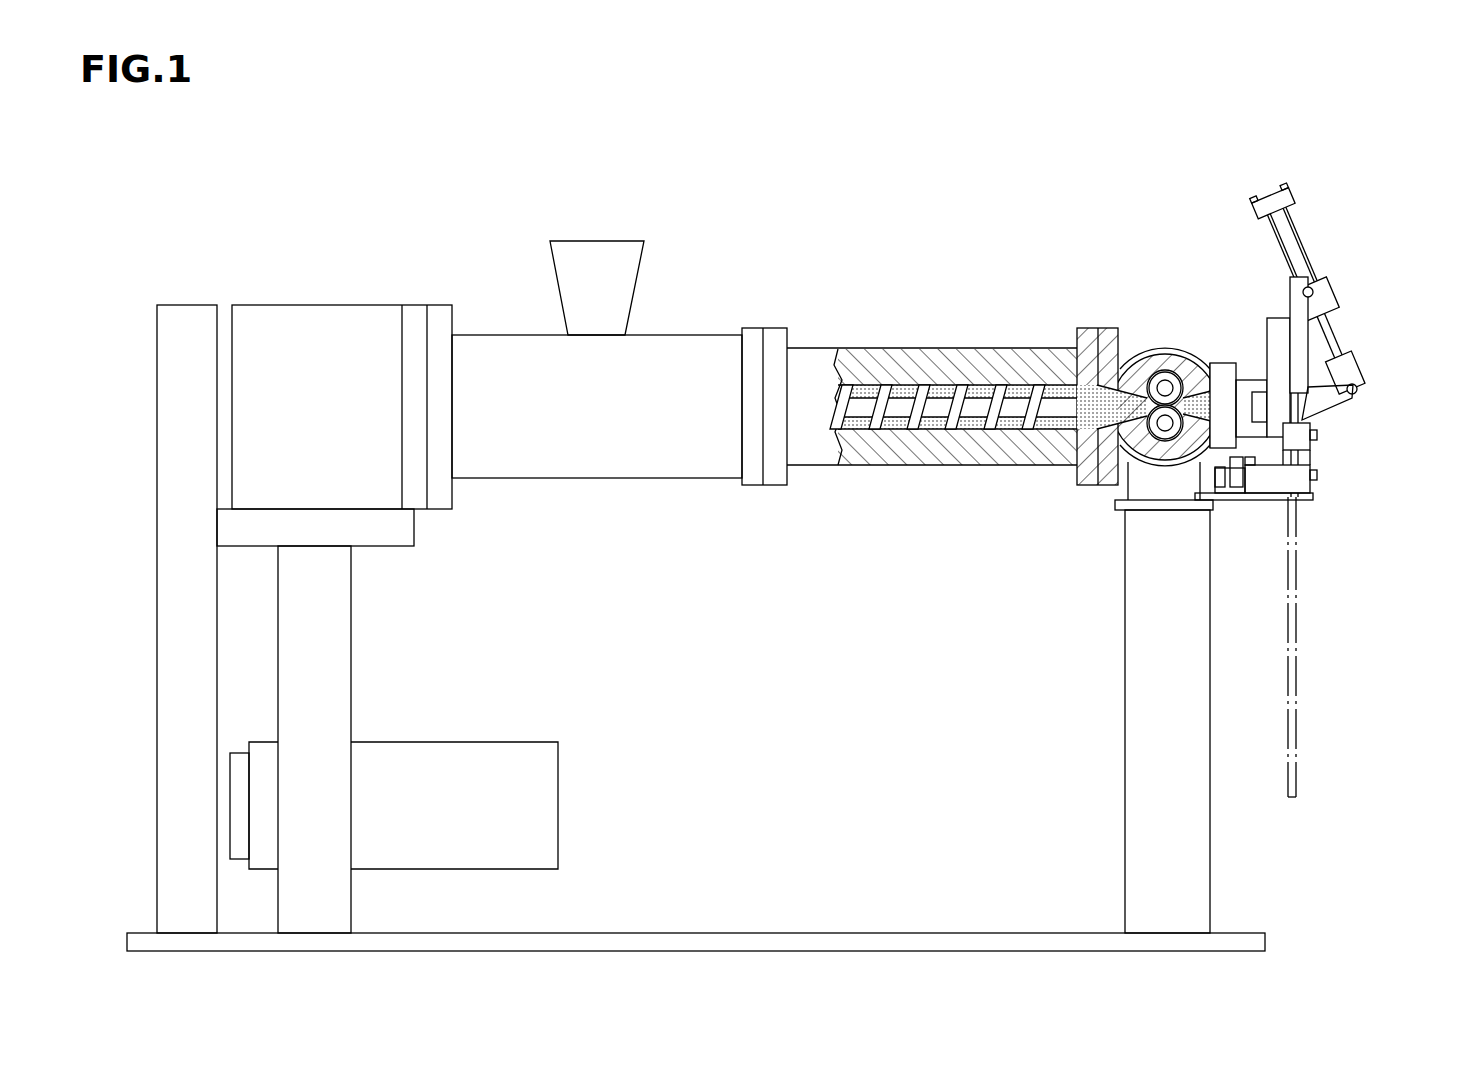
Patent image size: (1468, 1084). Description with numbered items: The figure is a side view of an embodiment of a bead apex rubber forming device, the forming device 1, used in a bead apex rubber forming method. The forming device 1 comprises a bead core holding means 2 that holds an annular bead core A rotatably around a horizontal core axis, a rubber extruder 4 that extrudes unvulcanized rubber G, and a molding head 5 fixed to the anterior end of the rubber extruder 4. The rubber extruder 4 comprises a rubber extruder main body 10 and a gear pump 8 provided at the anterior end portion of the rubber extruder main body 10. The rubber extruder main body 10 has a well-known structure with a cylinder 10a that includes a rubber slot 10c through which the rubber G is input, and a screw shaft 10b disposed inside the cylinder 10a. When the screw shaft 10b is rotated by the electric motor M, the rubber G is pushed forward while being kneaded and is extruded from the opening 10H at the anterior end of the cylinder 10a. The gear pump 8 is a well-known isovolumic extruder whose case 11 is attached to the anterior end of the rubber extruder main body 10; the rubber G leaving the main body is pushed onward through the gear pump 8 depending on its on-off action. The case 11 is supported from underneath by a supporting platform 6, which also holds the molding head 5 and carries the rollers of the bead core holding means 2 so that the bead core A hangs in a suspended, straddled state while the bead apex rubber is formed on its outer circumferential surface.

The forming device 1 is at (1324, 309).
The bead core holding means 2 is at (1312, 458).
The rubber extruder 4 is at (1072, 180).
The molding head 5 is at (1340, 295).
The supporting platform 6 is at (1125, 750).
The gear pump 8 is at (1136, 317).
The rubber extruder main body 10 is at (985, 343).
The cylinder 10a is at (897, 348).
The screw shaft 10b is at (870, 430).
The rubber slot 10c is at (590, 241).
The opening 10H is at (1098, 485).
The case 11 is at (1180, 355).
The unvulcanized rubber G is at (968, 420).
The electric motor M is at (505, 742).
The bead core A is at (1297, 733).